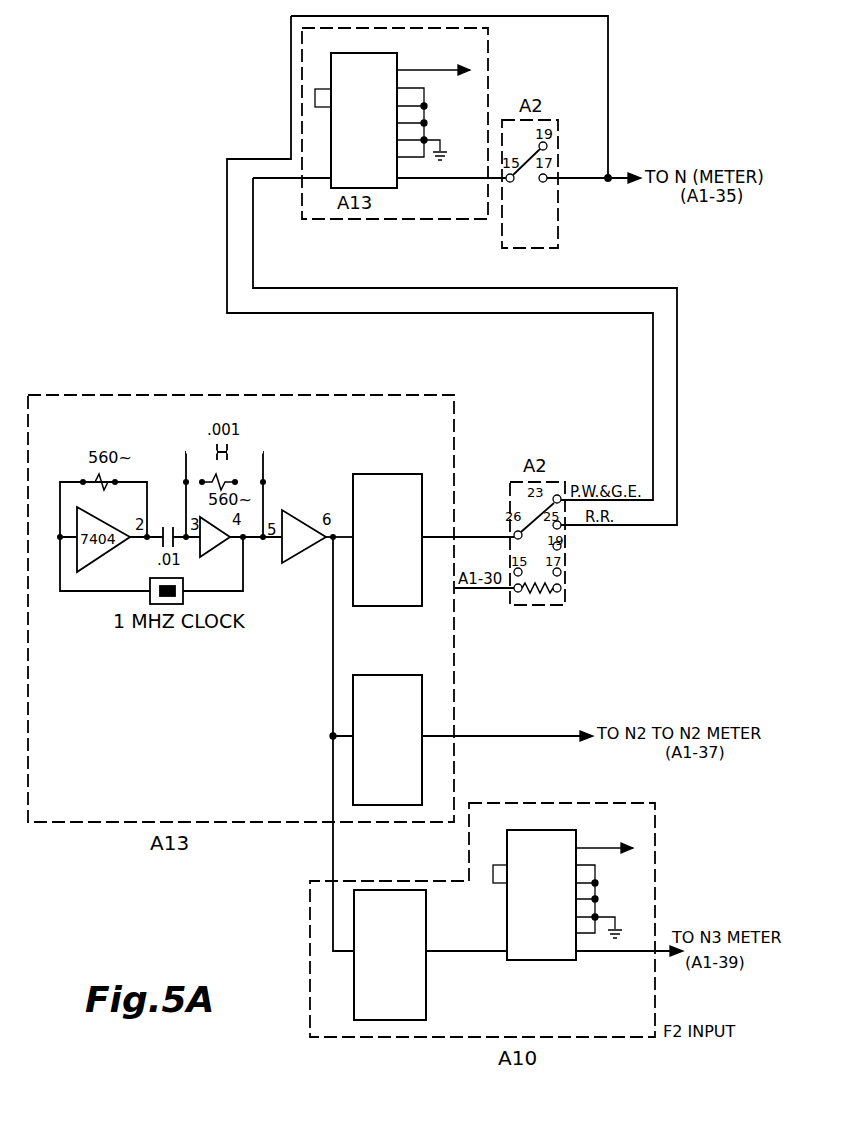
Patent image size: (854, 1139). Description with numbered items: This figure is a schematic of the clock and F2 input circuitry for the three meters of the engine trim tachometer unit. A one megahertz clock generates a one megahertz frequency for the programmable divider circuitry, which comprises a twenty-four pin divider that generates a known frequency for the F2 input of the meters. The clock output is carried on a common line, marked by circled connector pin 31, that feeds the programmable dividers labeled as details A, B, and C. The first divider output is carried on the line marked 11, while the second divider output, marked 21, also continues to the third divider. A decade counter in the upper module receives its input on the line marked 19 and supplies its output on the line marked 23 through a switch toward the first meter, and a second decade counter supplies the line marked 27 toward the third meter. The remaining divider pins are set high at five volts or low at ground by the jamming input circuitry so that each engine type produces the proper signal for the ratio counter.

The 7490 decade counter input (connector pin 19) 19 is at (386, 110).
The 7490 counter output line (connector pin 23) 23 is at (451, 164).
The 4059 N1 divider output (connector pin 11) 11 is at (433, 540).
The 4059 N2 output / N3 input line (connector pin 21) 21 is at (456, 848).
The clock distribution line (connector pin 31) 31 is at (325, 744).
The 7490 counter output to N3 meter (connector pin 27) 27 is at (588, 884).